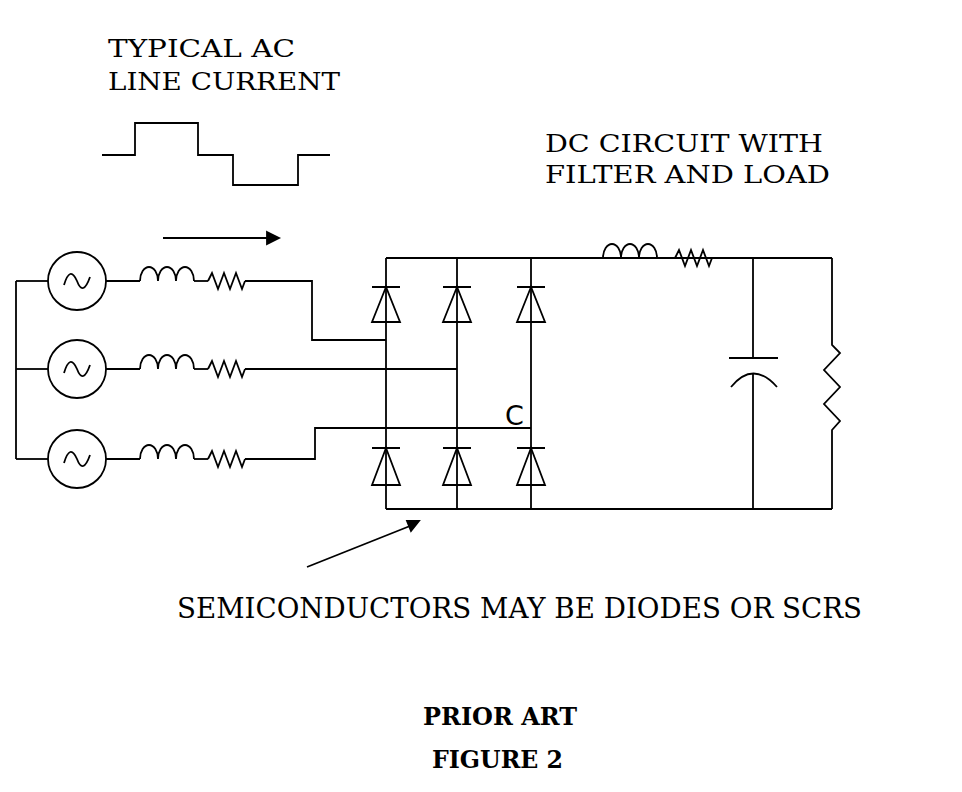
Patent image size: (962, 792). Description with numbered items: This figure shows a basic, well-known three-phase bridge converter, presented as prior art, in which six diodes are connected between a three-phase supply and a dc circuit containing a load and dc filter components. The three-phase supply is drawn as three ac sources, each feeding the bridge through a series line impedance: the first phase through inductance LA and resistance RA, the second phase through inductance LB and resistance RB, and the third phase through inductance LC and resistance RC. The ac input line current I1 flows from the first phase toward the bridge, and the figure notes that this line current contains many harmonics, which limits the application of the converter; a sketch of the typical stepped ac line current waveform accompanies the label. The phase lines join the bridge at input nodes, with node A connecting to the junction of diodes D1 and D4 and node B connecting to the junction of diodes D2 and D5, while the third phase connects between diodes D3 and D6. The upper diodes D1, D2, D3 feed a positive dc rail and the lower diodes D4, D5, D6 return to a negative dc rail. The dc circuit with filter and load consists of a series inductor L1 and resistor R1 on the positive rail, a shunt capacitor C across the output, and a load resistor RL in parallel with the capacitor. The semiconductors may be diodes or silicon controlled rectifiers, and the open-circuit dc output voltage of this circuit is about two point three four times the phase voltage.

The AC line current I1 is at (209, 228).
The line inductance phase A LA is at (167, 296).
The line resistance phase A RA is at (228, 299).
The line inductance phase B LB is at (167, 385).
The line resistance phase B RB is at (229, 388).
The line inductance phase C LC is at (167, 479).
The line resistance phase C RC is at (229, 482).
The phase A input node A is at (315, 310).
The phase B input node B is at (351, 355).
The semiconductor diode/SCR D1 is at (404, 304).
The semiconductor diode/SCR D2 is at (474, 304).
The semiconductor diode/SCR D3 is at (549, 304).
The semiconductor diode/SCR D4 is at (404, 466).
The semiconductor diode/SCR D5 is at (474, 466).
The semiconductor diode/SCR D6 is at (549, 466).
The filter inductor L1 is at (630, 279).
The filter resistor R1 is at (692, 282).
The filter capacitor C is at (760, 383).
The load resistor RL is at (857, 383).